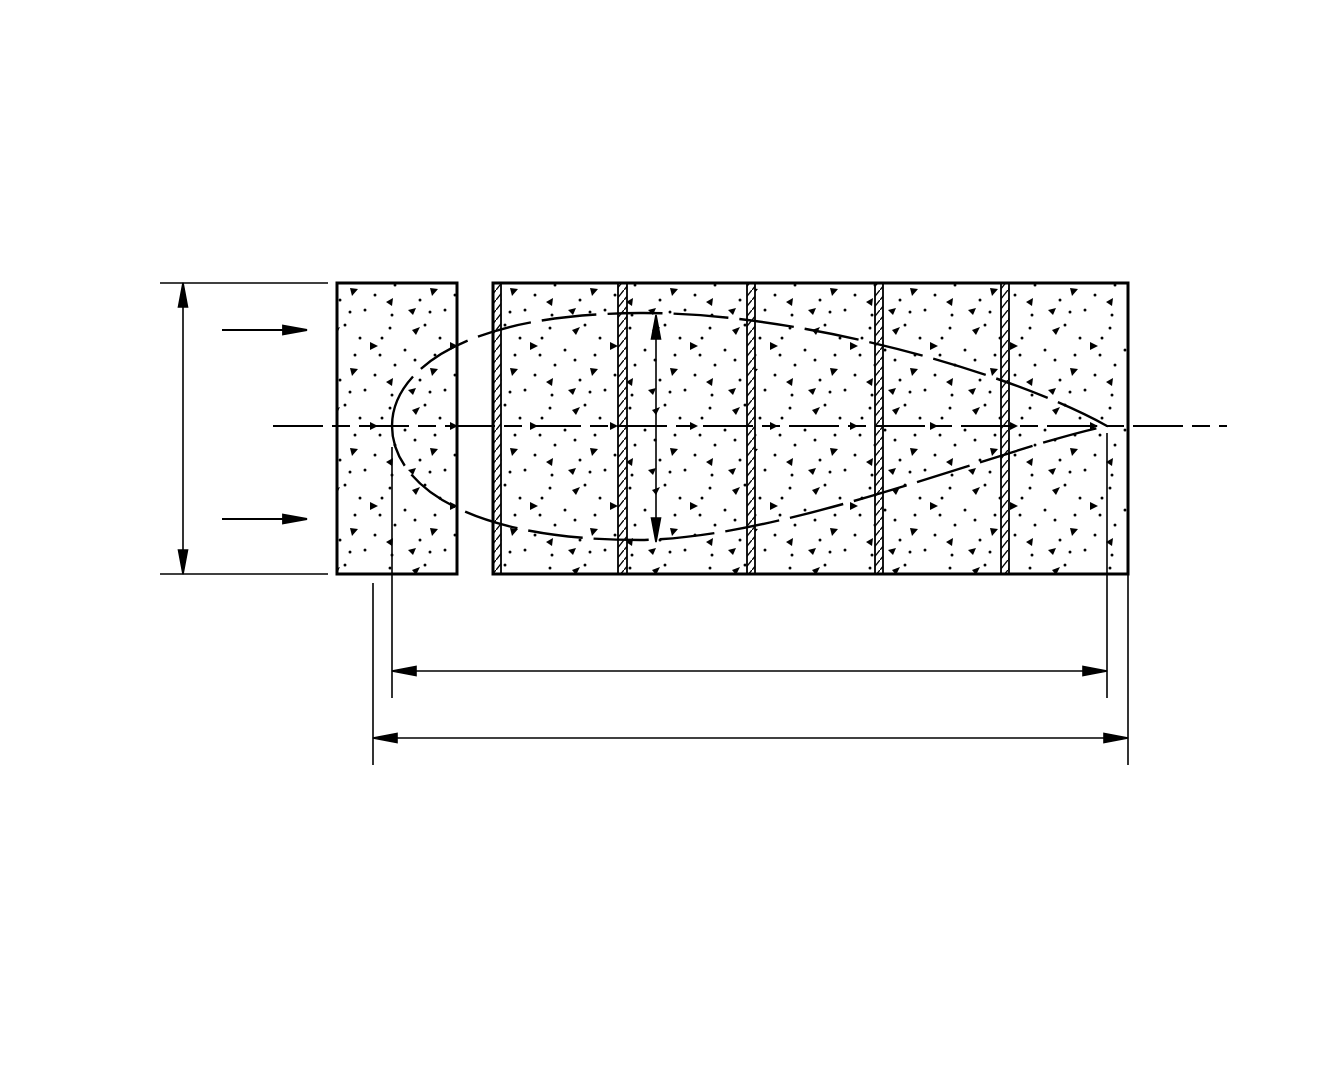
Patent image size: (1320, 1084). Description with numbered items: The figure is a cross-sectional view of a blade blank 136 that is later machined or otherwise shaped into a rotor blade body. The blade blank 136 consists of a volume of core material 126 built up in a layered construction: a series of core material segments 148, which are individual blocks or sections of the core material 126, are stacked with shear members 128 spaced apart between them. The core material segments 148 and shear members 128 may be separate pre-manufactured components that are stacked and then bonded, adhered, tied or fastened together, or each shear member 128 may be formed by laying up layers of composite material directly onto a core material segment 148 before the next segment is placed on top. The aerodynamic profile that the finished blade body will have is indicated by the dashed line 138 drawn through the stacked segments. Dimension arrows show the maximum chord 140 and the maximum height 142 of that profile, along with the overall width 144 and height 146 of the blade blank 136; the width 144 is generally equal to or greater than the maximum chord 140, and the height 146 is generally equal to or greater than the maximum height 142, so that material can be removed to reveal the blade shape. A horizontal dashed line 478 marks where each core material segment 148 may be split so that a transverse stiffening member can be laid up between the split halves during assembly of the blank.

The core material 126 is at (720, 365).
The core material segments 148 is at (1160, 255).
The shear members 128 is at (488, 298).
The blade blank 136 is at (700, 488).
The dashed line 138 is at (812, 328).
The maximum chord 140 is at (630, 672).
The maximum height 142 is at (657, 358).
The width 144 is at (530, 740).
The height 146 is at (180, 408).
The dashed line 478 is at (1173, 425).